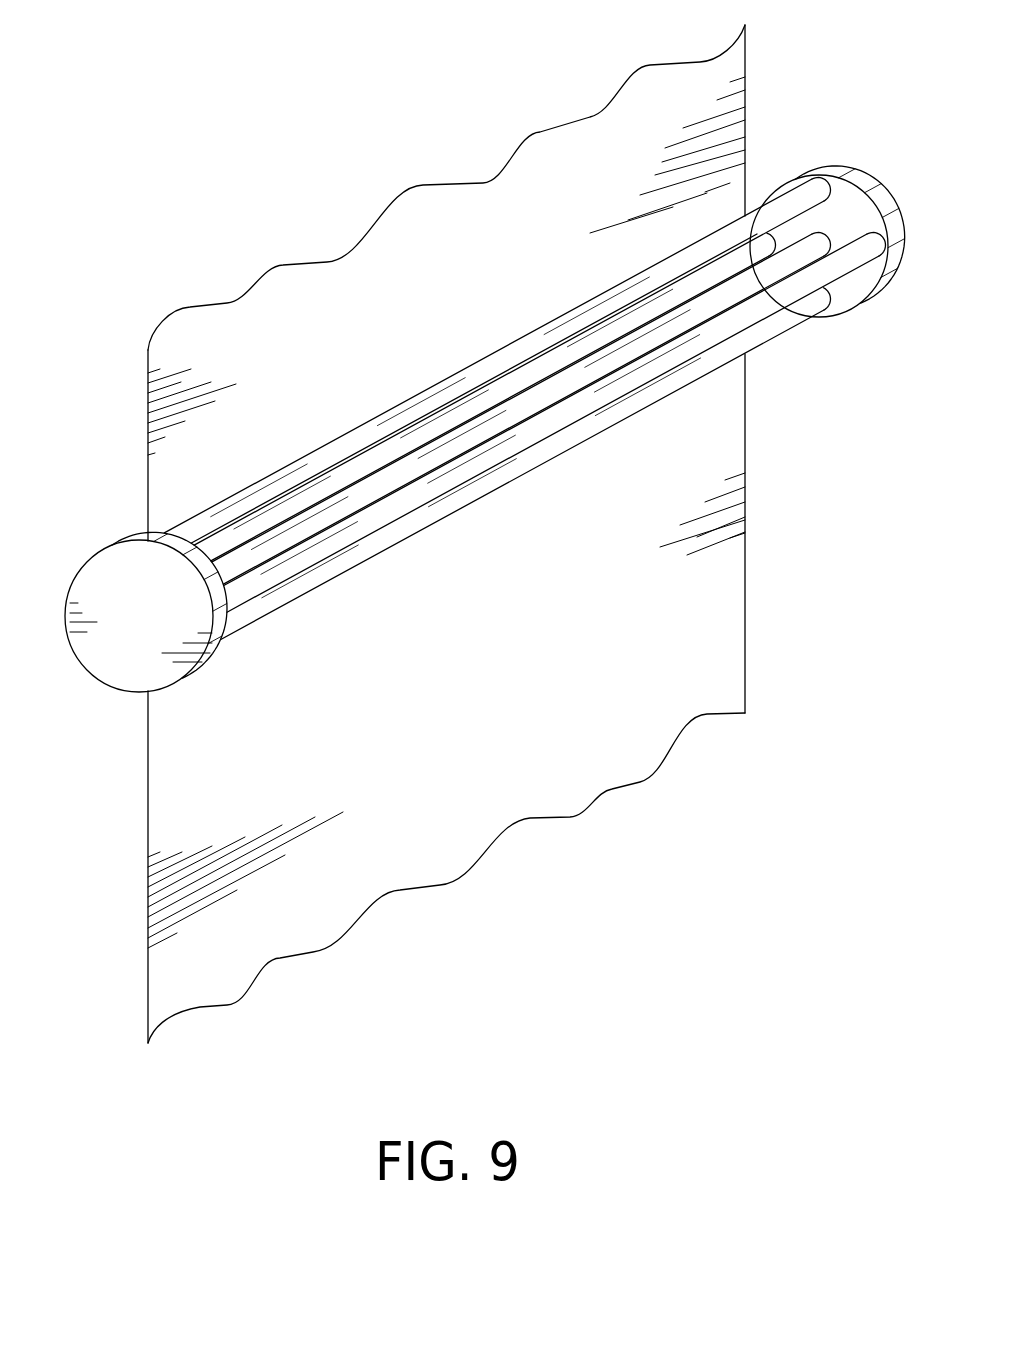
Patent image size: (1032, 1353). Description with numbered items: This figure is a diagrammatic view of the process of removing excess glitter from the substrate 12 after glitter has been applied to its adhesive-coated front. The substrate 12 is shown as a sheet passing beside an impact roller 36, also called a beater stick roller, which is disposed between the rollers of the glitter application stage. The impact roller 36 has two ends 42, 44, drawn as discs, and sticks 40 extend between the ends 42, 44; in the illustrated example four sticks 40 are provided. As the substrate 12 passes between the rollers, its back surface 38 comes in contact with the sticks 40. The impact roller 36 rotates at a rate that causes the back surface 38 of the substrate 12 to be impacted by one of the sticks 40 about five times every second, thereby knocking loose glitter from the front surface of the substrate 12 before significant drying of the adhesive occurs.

The substrate 12 is at (630, 664).
The back surface 38 is at (457, 800).
The sticks 40 is at (418, 412).
The impact roller 36 is at (115, 590).
The end of impact roller 42 is at (117, 657).
The end of impact roller 44 is at (852, 293).